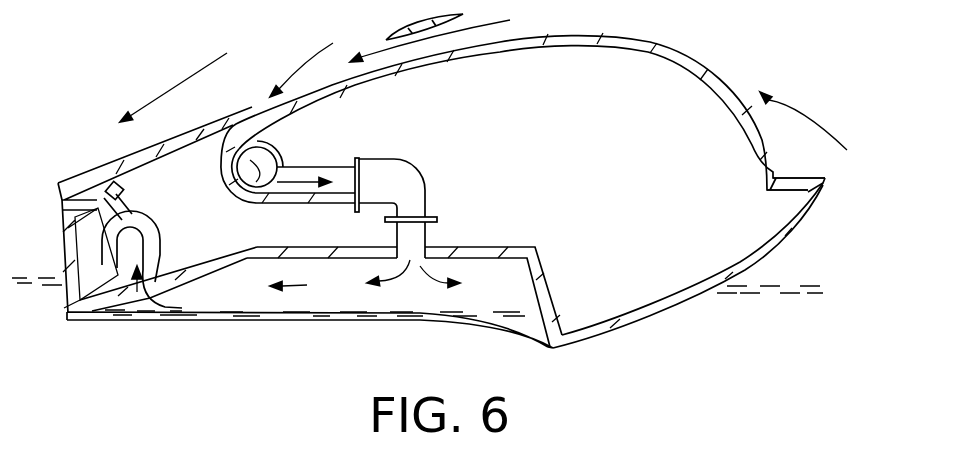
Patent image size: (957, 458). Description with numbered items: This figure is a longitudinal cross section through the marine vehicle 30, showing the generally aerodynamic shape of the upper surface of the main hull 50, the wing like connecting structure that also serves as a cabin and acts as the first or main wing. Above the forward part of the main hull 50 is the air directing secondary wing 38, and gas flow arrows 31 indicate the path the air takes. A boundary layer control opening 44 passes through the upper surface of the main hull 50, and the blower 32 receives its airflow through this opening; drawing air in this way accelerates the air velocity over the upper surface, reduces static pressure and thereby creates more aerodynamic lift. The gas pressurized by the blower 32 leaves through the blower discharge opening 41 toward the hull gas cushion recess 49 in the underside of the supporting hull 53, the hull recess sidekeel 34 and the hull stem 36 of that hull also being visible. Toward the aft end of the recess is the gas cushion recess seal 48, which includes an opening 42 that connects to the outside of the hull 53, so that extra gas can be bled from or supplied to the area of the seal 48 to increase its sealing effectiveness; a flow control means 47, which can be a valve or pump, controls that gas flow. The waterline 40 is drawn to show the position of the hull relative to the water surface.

The marine vehicle 30 is at (708, 72).
The gas flow arrows 31 is at (165, 97).
The blower 32 is at (427, 182).
The hull recess sidekeel 34 is at (413, 318).
The hull stem 36 is at (763, 260).
The air directing secondary wing 38 is at (400, 29).
The waterline 40 is at (304, 316).
The blower discharge opening 41 is at (413, 250).
The recess aft seal opening 42 is at (137, 246).
The boundary layer control opening 44 is at (272, 148).
The flow control means 47 is at (110, 201).
The gas cushion recess seal 48 is at (197, 282).
The hull gas cushion recess 49 is at (486, 301).
The main hull 50 is at (768, 150).
The supporting hull 53 is at (797, 216).